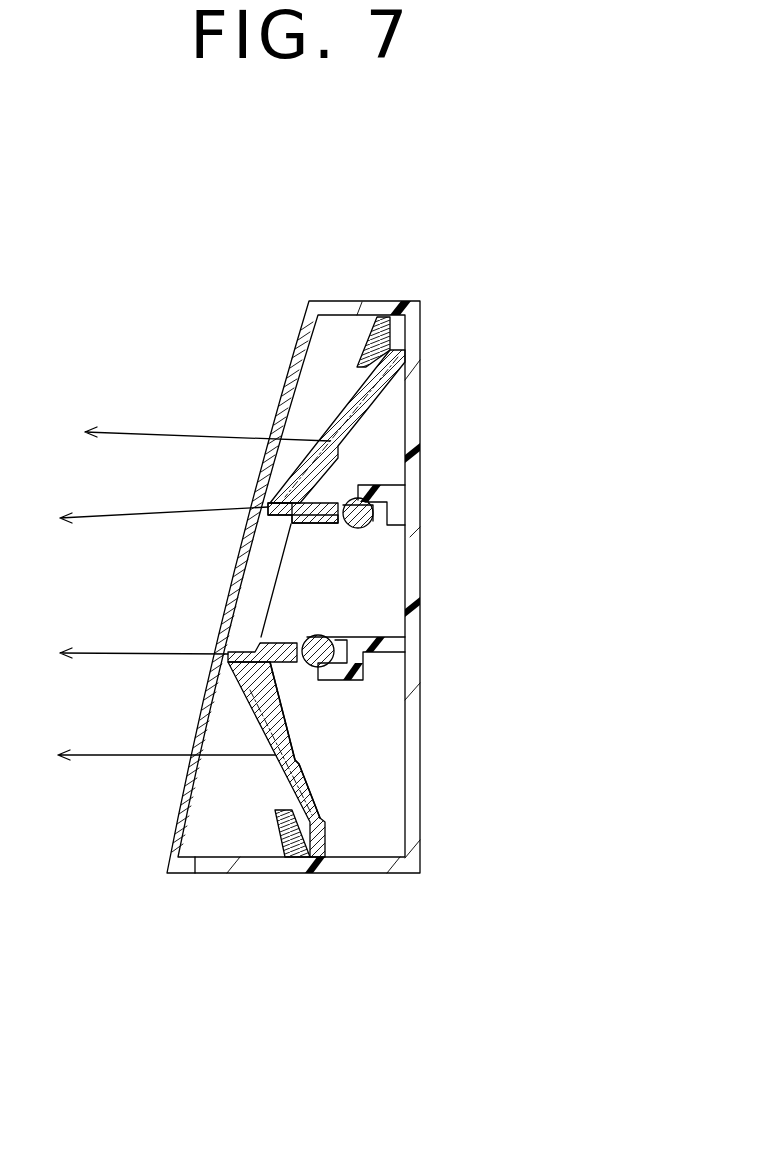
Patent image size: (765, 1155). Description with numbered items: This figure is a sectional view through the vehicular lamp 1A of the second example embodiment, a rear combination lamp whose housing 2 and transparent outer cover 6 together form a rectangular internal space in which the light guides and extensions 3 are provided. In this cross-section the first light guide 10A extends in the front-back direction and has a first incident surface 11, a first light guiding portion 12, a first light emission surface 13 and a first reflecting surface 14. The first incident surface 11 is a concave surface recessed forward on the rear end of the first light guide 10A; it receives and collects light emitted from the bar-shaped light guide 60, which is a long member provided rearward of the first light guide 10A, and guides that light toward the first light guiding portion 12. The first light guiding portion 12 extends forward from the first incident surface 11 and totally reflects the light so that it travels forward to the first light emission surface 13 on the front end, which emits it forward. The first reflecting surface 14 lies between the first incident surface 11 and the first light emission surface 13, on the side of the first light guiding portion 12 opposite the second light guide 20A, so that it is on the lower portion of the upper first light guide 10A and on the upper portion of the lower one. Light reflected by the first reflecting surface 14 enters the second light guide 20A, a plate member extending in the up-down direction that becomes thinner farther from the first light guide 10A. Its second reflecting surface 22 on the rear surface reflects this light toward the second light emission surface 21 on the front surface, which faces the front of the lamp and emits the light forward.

The vehicular lamp 1A is at (452, 252).
The housing 2 is at (362, 312).
The second light guide 20A is at (330, 417).
The outer cover 6 is at (336, 424).
The first light guide 10A is at (330, 500).
The extension 3 is at (392, 336).
The first light emission surface 13 is at (266, 504).
The first reflecting surface 14 is at (290, 519).
The first light guiding portion 12 is at (303, 524).
The first incident surface 11 is at (357, 528).
The bar-shaped light guide 60 is at (374, 513).
The second light emission surface 21 is at (293, 700).
The second reflecting surface 22 is at (307, 777).